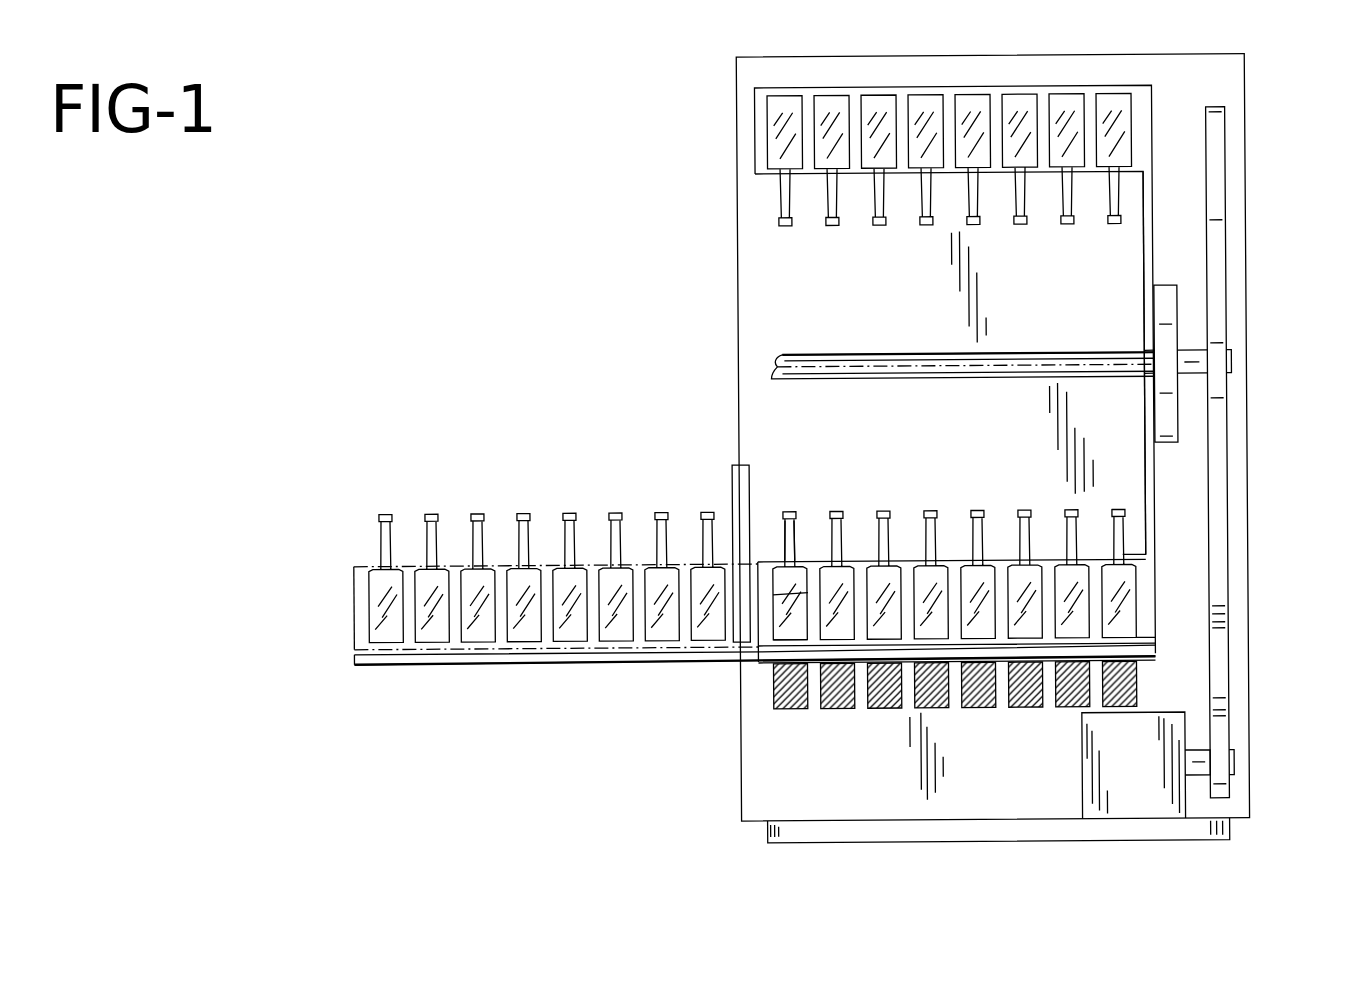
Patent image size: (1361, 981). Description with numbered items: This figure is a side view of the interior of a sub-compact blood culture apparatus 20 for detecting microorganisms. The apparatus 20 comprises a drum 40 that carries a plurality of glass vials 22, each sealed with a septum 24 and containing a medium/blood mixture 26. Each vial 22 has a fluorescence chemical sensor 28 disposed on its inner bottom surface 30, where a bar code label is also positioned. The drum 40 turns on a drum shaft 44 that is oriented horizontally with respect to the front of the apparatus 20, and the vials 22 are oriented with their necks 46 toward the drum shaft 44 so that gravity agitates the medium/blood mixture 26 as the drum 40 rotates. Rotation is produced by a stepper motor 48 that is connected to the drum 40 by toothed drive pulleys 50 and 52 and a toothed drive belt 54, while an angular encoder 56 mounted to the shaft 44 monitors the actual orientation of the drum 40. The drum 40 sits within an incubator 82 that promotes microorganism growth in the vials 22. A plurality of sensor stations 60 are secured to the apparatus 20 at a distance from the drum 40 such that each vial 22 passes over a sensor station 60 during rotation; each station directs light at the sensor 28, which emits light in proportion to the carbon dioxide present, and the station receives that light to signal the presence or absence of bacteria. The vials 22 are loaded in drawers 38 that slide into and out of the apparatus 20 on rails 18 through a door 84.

The rails 18 is at (1185, 637).
The sub-compact blood culture apparatus 20 is at (720, 74).
The glass vials 22 is at (1122, 583).
The septum 24 is at (841, 526).
The medium/blood mixture 26 is at (787, 615).
The fluorescence chemical sensor 28 is at (773, 635).
The inner bottom surface 30 is at (774, 708).
The drawer 38 is at (354, 572).
The drum 40 is at (1152, 188).
The drum shaft 44 is at (787, 364).
The necks 46 is at (790, 528).
The stepper motor 48 is at (1140, 793).
The toothed drive pulley 50 is at (1218, 733).
The toothed drive pulley 52 is at (1283, 452).
The toothed drive belt 54 is at (1212, 687).
The angular encoder 56 is at (1165, 303).
The sensor stations 60 is at (883, 708).
The incubator 82 is at (775, 270).
The door 84 is at (731, 480).